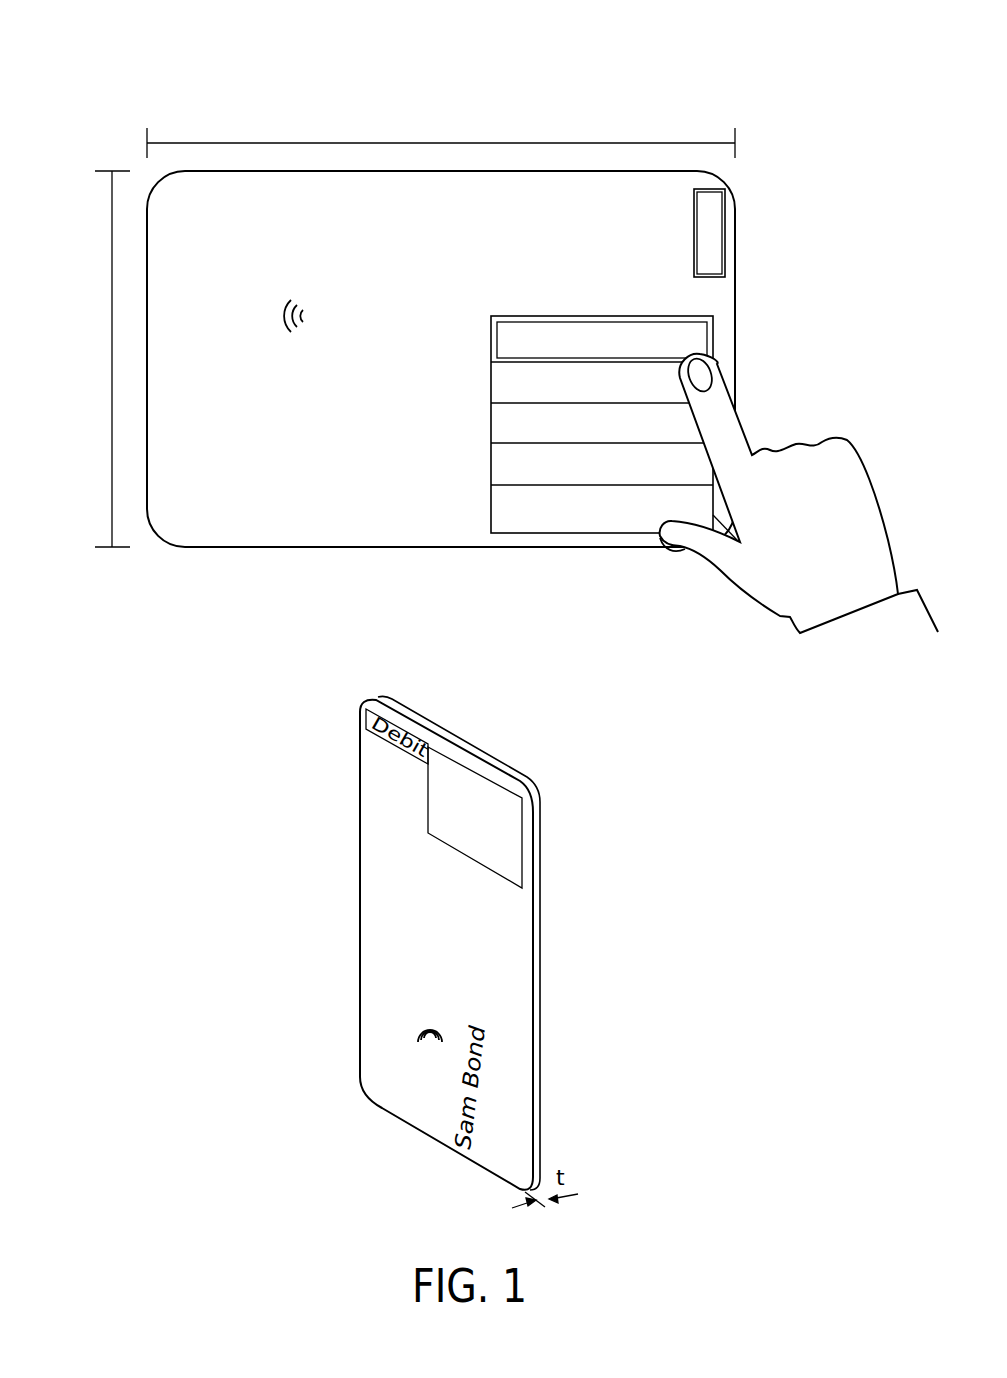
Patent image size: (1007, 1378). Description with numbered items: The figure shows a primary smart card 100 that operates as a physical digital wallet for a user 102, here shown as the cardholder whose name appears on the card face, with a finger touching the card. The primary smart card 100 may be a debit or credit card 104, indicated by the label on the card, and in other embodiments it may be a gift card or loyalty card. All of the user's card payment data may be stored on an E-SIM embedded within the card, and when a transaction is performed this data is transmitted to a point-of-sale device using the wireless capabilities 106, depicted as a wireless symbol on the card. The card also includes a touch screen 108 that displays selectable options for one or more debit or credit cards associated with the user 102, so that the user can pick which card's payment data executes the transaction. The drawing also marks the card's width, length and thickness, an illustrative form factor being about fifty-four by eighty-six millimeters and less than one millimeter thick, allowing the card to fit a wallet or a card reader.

The primary smart card 100 is at (114, 35).
The user 102 is at (233, 527).
The debit or credit card 104 is at (735, 245).
The wireless capabilities 106 is at (306, 315).
The touch screen 108 is at (707, 343).